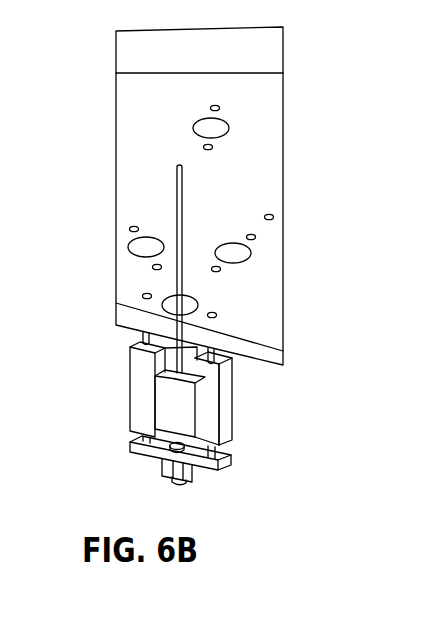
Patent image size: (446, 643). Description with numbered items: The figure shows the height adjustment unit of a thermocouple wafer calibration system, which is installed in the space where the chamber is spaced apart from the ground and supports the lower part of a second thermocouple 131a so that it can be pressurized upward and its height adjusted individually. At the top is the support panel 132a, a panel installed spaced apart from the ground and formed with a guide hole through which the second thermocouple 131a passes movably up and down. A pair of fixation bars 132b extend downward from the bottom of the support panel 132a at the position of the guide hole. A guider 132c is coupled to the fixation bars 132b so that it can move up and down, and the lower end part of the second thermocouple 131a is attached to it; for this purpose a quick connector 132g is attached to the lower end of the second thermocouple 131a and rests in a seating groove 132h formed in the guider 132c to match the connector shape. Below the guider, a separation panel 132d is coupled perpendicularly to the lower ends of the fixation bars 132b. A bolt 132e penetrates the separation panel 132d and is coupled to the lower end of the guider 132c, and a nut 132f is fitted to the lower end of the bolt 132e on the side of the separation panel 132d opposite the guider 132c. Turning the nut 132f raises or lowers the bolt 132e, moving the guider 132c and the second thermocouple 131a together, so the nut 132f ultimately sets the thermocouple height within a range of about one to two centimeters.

The second thermocouple 131a is at (180, 188).
The support panel 132a is at (248, 284).
The fixation bar 132b is at (230, 366).
The guider 132c is at (225, 410).
The separation panel 132d is at (203, 479).
The bolt 132e is at (222, 452).
The nut 132f is at (160, 476).
The quick connector 132g is at (163, 402).
The seating groove 132h is at (158, 356).